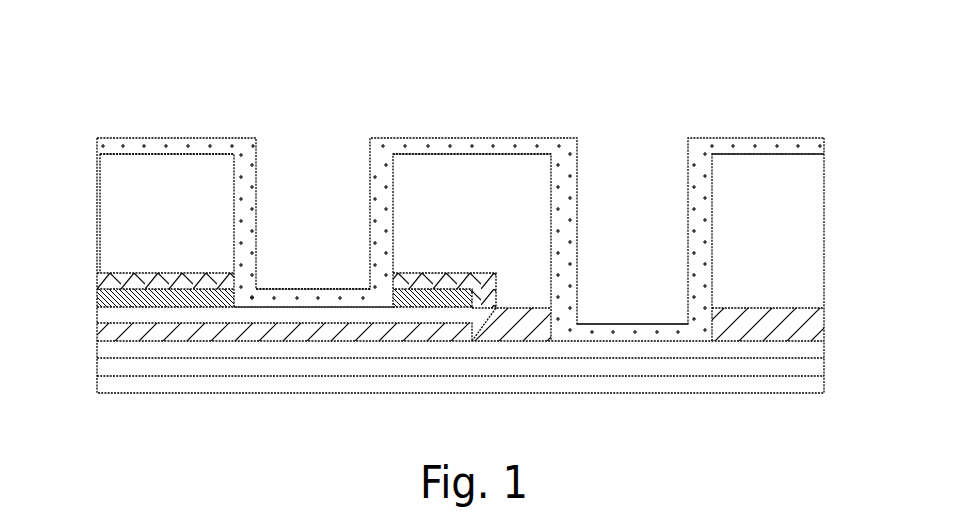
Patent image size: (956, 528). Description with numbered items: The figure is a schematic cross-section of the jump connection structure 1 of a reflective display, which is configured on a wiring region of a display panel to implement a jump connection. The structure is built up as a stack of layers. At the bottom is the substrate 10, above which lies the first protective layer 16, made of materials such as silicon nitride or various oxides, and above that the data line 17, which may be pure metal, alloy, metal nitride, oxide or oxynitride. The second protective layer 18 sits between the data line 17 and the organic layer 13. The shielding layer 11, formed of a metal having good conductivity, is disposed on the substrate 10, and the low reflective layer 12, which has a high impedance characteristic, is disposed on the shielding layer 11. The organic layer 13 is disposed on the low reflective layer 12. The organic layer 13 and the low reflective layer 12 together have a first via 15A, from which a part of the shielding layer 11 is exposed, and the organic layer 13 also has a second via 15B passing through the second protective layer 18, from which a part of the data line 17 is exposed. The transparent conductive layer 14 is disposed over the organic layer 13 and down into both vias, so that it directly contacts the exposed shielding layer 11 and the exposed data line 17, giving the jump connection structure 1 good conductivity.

The jump connection structure 1 is at (60, 47).
The substrate 10 is at (98, 385).
The shielding layer 11 is at (98, 320).
The low reflective layer 12 is at (97, 293).
The organic layer 13 is at (100, 210).
The transparent conductive layer 14 is at (98, 145).
The first via 15A is at (314, 185).
The second via 15B is at (644, 178).
The first protective layer 16 is at (818, 366).
The data line 17 is at (818, 350).
The second protective layer 18 is at (808, 323).